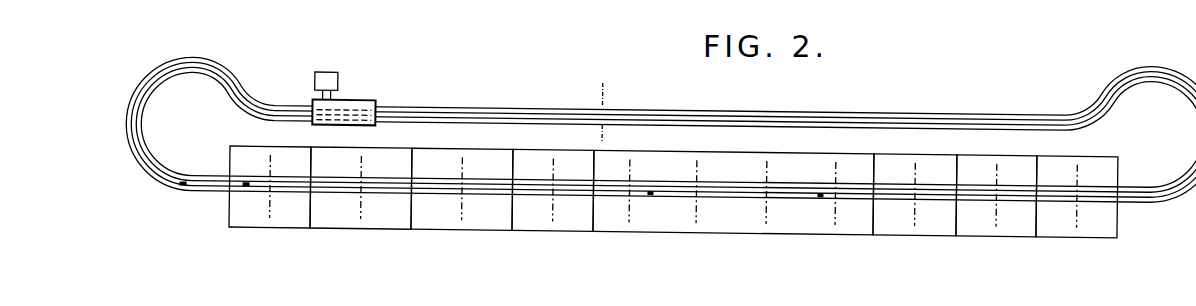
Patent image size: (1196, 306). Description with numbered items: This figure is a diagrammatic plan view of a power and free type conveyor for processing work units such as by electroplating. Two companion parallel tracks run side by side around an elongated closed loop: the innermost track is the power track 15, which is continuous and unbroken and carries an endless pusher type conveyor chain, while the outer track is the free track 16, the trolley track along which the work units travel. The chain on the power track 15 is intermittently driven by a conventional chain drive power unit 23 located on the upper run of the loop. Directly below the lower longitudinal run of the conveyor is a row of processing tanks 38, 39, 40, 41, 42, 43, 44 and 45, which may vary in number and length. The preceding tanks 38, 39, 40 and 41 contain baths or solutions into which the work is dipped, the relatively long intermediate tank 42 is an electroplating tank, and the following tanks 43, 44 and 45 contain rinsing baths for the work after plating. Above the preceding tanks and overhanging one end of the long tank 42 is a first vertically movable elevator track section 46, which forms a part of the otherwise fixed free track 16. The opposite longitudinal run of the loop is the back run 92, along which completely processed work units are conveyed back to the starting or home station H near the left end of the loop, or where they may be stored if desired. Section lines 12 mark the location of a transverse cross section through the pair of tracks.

The home station H is at (176, 190).
The section line 12 is at (604, 134).
The power track 15 is at (419, 176).
The free track 16 is at (193, 192).
The chain drive power unit 23 is at (355, 99).
The processing tank 38 is at (282, 227).
The processing tank 39 is at (363, 227).
The processing tank 40 is at (468, 227).
The processing tank 41 is at (553, 227).
The electroplating tank 42 is at (733, 227).
The rinsing tank 43 is at (917, 227).
The rinsing tank 44 is at (995, 227).
The rinsing tank 45 is at (1083, 227).
The first elevator track section 46 is at (402, 191).
The back run 92 is at (554, 105).